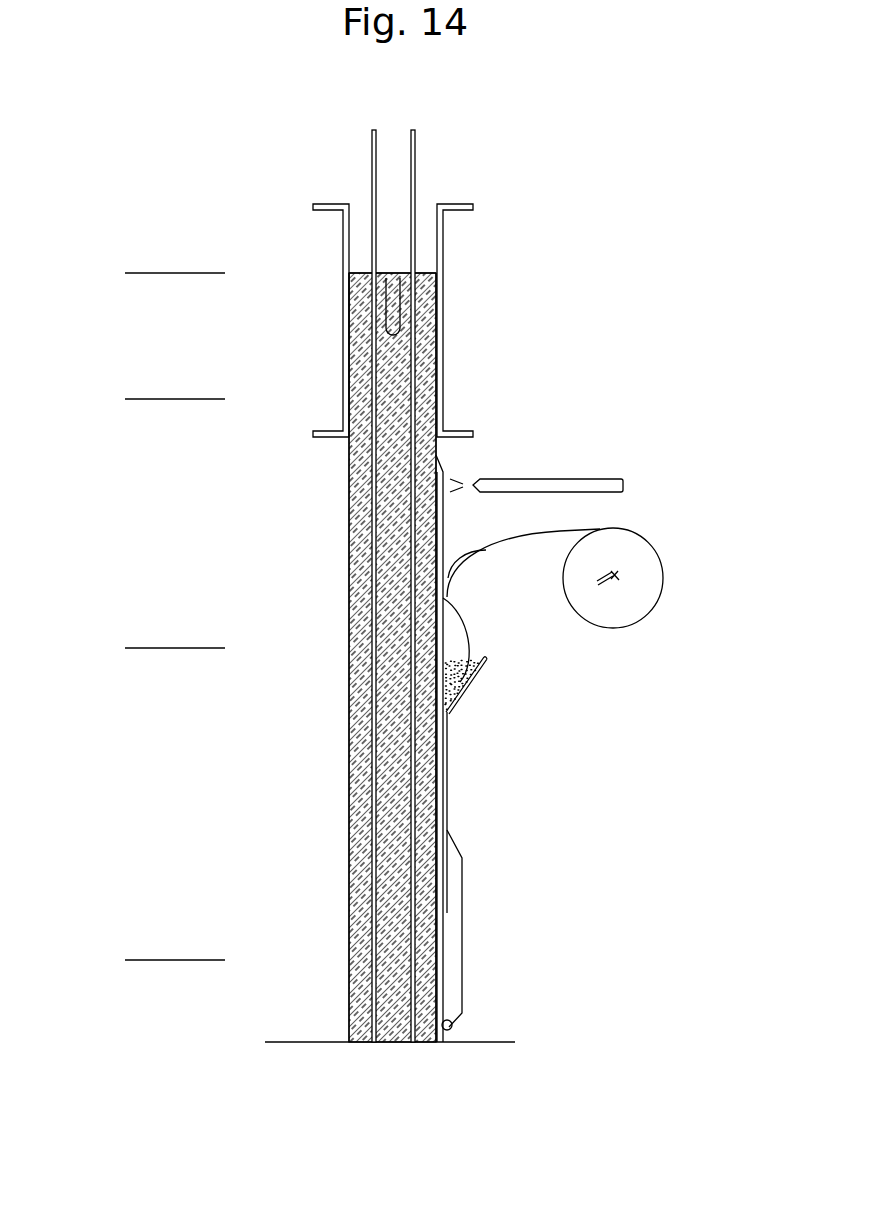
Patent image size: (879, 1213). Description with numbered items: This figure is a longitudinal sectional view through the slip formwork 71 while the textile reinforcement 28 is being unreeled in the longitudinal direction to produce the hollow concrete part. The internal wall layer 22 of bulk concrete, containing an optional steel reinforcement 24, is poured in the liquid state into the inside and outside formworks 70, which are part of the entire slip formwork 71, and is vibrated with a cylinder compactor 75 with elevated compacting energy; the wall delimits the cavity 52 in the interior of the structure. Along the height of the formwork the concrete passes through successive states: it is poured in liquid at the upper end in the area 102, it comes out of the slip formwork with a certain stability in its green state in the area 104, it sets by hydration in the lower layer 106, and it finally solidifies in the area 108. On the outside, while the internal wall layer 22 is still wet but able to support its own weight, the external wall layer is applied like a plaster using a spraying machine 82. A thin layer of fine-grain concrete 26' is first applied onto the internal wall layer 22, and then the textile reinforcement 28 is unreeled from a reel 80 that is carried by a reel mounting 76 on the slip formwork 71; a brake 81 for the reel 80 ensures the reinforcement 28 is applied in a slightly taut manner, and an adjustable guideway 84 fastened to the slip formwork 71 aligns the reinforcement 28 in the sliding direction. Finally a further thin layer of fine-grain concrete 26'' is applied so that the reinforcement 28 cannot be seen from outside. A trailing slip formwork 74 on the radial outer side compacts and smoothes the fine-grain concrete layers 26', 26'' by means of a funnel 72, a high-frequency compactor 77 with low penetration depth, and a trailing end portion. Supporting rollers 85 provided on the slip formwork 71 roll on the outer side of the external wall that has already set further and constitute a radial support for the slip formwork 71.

The internal wall layer 22 is at (360, 274).
The steel reinforcement 24 is at (414, 162).
The thin layer of fine-grain concrete 26' is at (474, 735).
The further thin layer of fine-grain concrete 26'' is at (482, 638).
The textile reinforcement 28 is at (540, 533).
The cavity 52 is at (278, 787).
The formworks 70 is at (323, 205).
The slip formwork 71 is at (660, 312).
The funnel 72 is at (490, 663).
The trailing slip formwork 74 is at (449, 812).
The cylinder compactor 75 is at (398, 278).
The reel mounting 76 is at (619, 579).
The high-frequency compactor 77 is at (450, 705).
The reel 80 is at (636, 551).
The brake 81 is at (603, 585).
The spraying machine 82 is at (548, 484).
The adjustable guideway 84 is at (450, 577).
The supporting rollers 85 is at (453, 1024).
The area 102 is at (141, 334).
The area 104 is at (141, 536).
The layer 106 is at (141, 808).
The area 108 is at (141, 995).